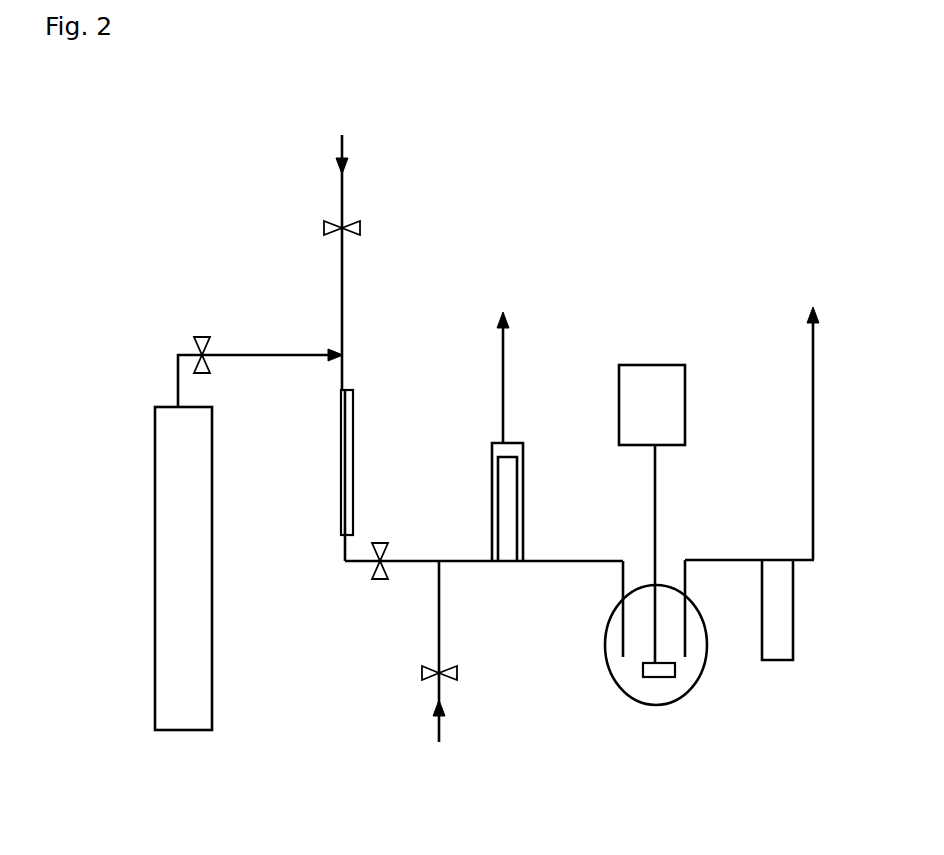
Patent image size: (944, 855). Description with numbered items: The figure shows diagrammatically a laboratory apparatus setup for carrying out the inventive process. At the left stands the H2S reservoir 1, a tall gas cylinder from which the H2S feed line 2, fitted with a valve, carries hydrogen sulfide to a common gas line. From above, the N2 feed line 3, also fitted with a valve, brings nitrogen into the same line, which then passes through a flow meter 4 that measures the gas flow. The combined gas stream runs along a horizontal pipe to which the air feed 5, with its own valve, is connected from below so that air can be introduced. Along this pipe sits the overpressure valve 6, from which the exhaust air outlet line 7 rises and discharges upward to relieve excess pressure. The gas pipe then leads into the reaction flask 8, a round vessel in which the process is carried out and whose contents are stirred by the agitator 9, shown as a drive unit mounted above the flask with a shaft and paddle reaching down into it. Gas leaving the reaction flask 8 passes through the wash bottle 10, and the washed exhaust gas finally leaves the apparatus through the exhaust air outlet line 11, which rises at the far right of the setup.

The H2S reservoir 1 is at (197, 697).
The H2S feed line 2 is at (260, 363).
The N2 feed line 3 is at (345, 245).
The flow meter 4 is at (348, 449).
The air feed 5 is at (436, 672).
The overpressure valve 6 is at (512, 504).
The exhaust air outlet line 7 is at (511, 377).
The reaction flask 8 is at (688, 668).
The agitator 9 is at (655, 412).
The wash bottle 10 is at (783, 610).
The exhaust air outlet line 11 is at (830, 433).